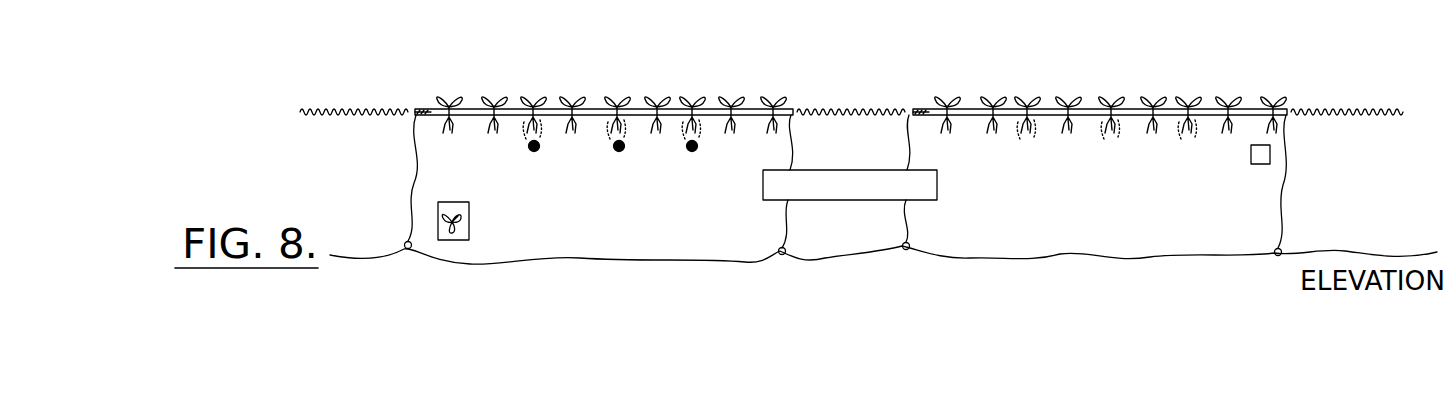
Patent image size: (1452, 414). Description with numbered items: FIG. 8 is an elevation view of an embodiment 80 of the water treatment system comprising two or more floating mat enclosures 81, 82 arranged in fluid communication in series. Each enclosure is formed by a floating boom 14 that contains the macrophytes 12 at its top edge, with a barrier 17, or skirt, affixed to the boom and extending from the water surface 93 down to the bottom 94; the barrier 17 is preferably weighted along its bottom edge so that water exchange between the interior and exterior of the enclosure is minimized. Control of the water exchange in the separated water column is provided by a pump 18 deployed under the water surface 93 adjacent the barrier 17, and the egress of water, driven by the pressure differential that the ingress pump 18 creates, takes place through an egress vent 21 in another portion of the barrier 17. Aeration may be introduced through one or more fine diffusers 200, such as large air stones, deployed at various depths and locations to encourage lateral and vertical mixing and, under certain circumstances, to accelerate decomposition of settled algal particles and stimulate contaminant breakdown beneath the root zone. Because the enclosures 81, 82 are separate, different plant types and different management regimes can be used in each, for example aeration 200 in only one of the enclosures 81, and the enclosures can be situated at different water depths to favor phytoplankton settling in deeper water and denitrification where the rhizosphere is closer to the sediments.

The macrophytes 12 is at (492, 88).
The floating boom 14 is at (420, 106).
The barrier 17 is at (1290, 155).
The pump 18 is at (436, 217).
The egress vent 21 is at (1270, 158).
The embodiment 80 is at (320, 50).
The floating mat enclosure 81 is at (613, 68).
The floating mat enclosure 82 is at (1112, 68).
The water surface 93 is at (1357, 105).
The bottom 94 is at (1317, 252).
The fine diffuser 200 is at (614, 152).